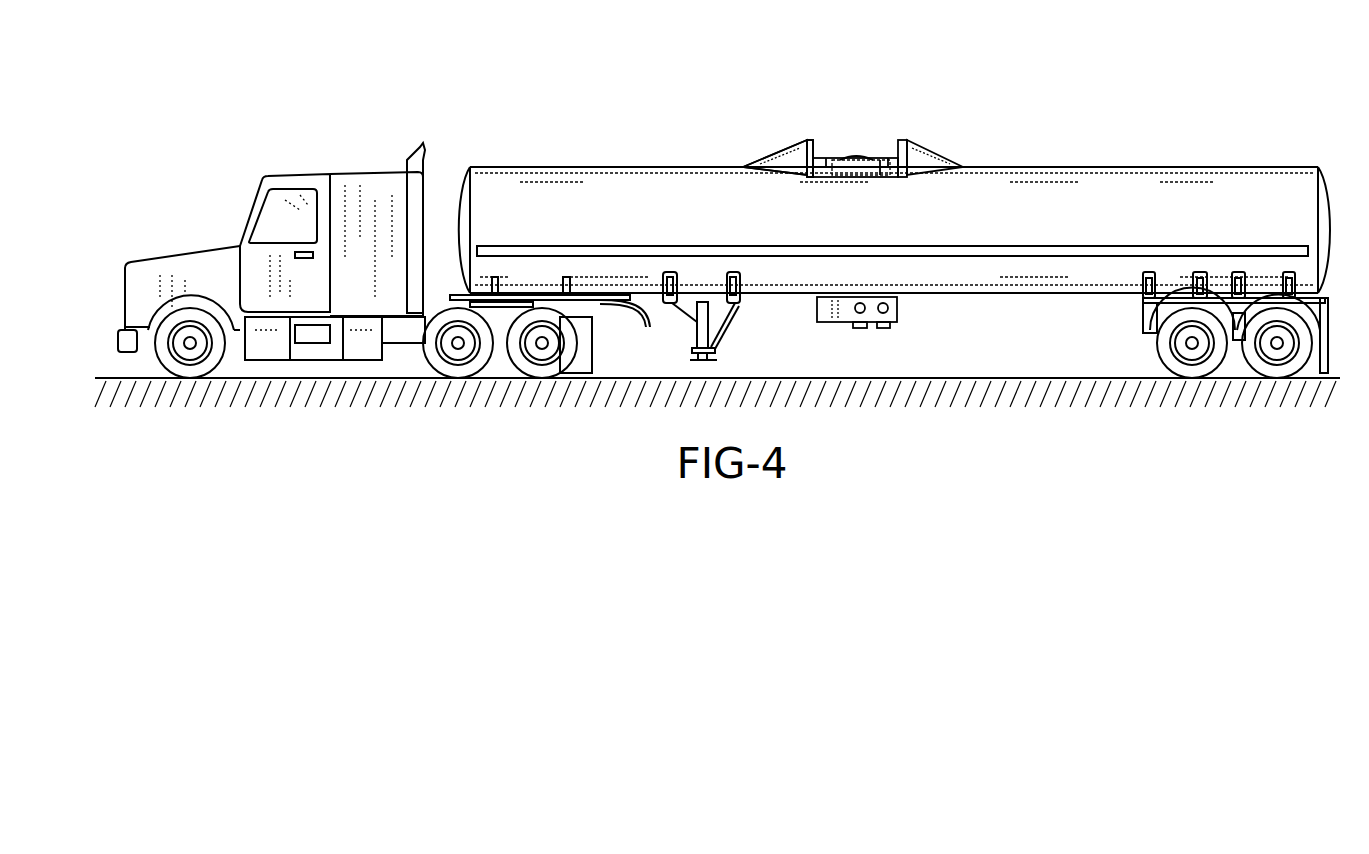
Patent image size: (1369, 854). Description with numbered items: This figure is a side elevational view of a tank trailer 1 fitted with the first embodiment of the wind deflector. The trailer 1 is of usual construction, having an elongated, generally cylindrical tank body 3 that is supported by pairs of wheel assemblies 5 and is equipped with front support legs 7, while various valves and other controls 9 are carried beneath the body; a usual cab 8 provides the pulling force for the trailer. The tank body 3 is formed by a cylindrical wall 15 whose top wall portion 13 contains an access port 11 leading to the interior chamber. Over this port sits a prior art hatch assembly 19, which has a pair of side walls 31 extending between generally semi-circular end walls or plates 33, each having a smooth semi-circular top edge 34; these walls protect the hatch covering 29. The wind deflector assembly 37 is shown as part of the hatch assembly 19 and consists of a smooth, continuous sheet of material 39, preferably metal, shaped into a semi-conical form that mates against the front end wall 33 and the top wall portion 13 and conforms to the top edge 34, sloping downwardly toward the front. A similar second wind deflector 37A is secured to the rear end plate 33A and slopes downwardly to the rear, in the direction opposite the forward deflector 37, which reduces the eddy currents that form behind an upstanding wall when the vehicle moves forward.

The tank trailer 1 is at (1140, 150).
The tank body 3 is at (557, 167).
The wheel assemblies 5 is at (1193, 377).
The front support legs 7 is at (697, 337).
The cab 8 is at (245, 210).
The controls 9 is at (840, 323).
The access port 11 is at (855, 178).
The top wall portion 13 is at (825, 150).
The cylindrical wall 15 is at (612, 167).
The hatch assembly 19 is at (837, 130).
The hatch covering 29 is at (857, 155).
The side walls 31 is at (887, 172).
The end walls 33 is at (802, 130).
The top edge 34 is at (810, 158).
The wind deflector assembly 37 is at (767, 150).
The sheet of material 39 is at (775, 157).
The rear end plate 33A is at (910, 130).
The second wind deflector 37A is at (943, 147).